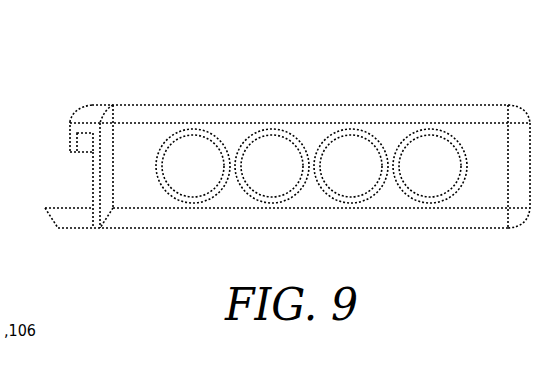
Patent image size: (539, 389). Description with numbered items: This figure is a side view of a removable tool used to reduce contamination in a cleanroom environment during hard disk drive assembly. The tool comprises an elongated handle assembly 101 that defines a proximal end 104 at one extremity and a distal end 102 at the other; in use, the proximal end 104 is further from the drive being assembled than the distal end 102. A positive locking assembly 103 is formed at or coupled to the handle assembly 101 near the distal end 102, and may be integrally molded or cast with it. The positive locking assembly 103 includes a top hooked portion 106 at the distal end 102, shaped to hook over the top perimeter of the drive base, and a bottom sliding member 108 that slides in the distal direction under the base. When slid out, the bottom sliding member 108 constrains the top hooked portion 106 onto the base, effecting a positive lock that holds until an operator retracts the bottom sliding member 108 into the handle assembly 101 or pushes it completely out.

The handle assembly 101 is at (330, 103).
The distal end 102 is at (80, 90).
The positive locking assembly 103 is at (60, 162).
The proximal end 104 is at (487, 85).
The top hooked portion 106 is at (72, 137).
The bottom sliding member 108 is at (70, 218).